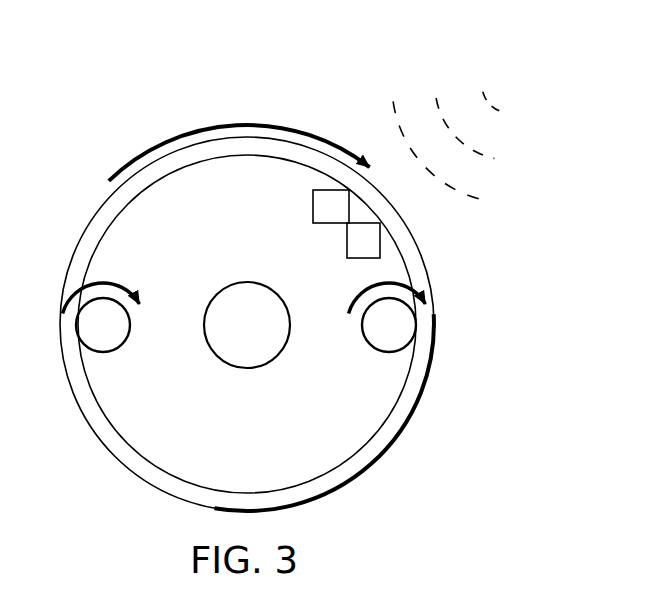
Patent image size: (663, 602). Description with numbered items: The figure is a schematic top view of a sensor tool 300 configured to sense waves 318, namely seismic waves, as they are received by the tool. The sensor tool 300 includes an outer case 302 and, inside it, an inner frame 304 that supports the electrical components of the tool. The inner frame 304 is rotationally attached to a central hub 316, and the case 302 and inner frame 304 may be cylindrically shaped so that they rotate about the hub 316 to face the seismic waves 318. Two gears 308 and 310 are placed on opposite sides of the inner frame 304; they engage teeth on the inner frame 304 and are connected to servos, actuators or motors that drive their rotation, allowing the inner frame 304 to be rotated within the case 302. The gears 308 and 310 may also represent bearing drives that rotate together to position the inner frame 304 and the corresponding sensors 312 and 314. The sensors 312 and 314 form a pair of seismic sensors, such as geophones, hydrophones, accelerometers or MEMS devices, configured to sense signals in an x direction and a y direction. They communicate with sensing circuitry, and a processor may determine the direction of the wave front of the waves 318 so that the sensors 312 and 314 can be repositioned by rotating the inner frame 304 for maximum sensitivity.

The sensor tool 300 is at (104, 448).
The case 302 is at (147, 482).
The inner frame 304 is at (335, 468).
The gear 308 is at (118, 350).
The gear 310 is at (368, 345).
The sensor 312 is at (313, 208).
The sensor 314 is at (347, 240).
The hub 316 is at (224, 340).
The waves 318 is at (508, 93).